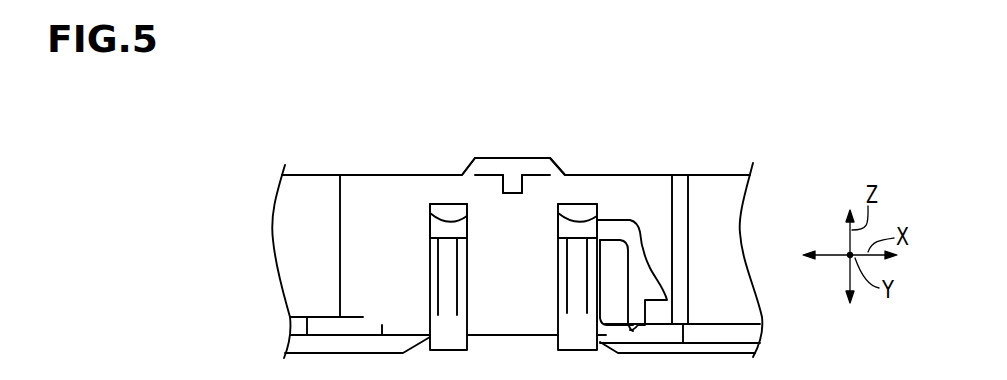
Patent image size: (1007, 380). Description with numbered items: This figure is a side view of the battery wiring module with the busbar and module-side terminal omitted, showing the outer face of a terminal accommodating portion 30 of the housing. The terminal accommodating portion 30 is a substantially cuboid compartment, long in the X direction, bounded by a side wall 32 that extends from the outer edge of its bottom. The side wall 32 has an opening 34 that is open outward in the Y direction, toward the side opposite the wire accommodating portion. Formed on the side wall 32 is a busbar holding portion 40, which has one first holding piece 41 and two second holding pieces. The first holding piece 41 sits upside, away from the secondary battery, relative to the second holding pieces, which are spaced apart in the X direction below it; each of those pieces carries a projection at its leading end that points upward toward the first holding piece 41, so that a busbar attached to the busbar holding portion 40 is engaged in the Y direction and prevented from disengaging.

The terminal accommodating portion 30 is at (517, 238).
The side wall 32 is at (388, 182).
The opening 34 is at (598, 210).
The busbar holding portion 40 is at (531, 153).
The first holding piece 41 is at (512, 165).